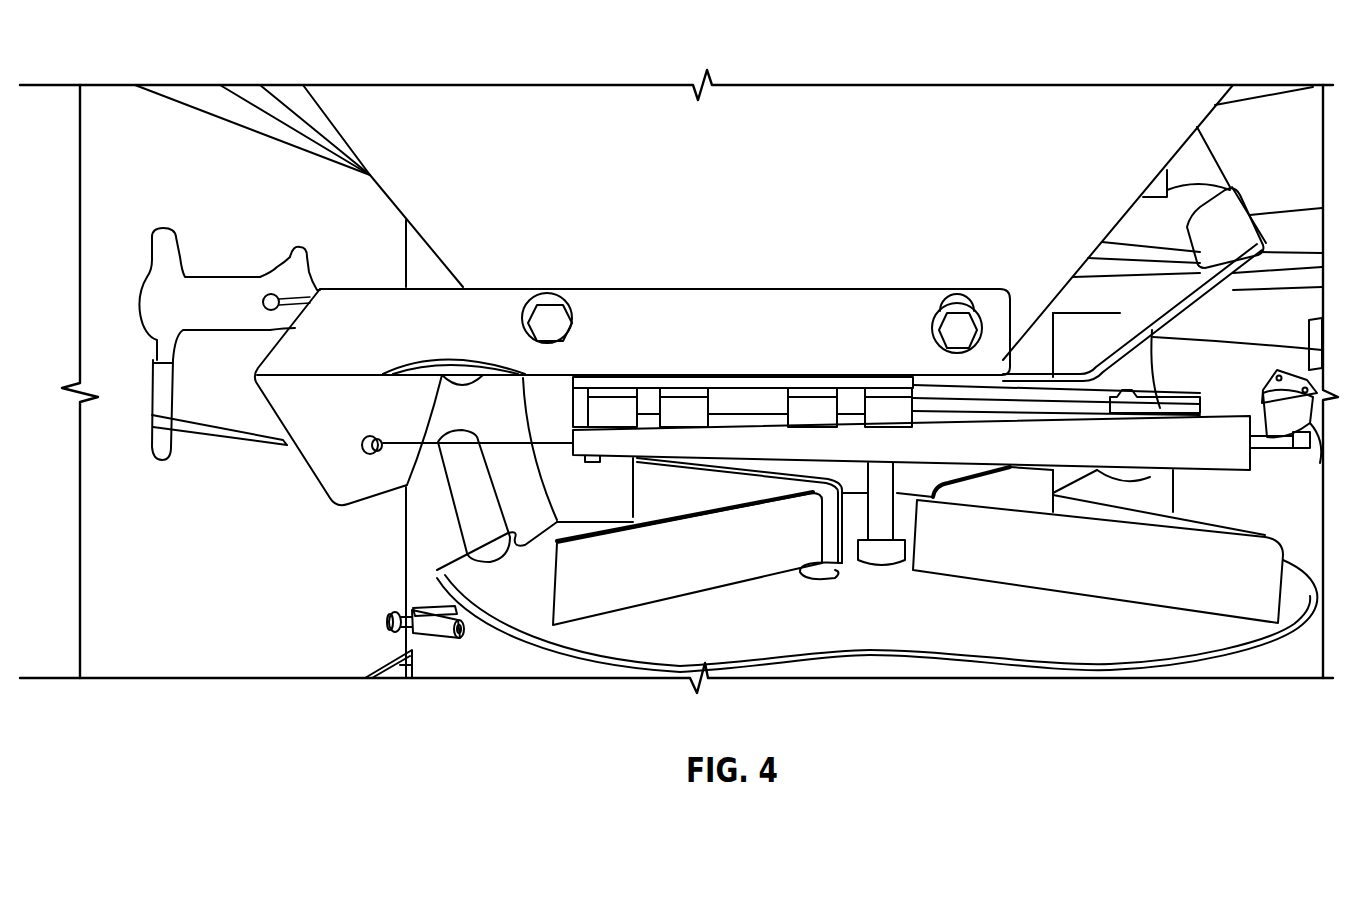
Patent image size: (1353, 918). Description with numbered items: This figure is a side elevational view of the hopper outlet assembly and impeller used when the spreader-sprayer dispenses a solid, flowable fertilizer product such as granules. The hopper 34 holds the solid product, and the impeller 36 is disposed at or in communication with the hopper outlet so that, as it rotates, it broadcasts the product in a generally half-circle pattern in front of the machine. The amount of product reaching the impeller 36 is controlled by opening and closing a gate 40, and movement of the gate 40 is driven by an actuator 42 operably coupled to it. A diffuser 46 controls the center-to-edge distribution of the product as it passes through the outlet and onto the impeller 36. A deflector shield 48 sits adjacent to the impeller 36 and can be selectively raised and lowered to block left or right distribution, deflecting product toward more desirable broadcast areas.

The hopper 34 is at (916, 116).
The impeller 36 is at (1107, 652).
The gate 40 is at (1143, 400).
The actuator 42 is at (163, 444).
The diffuser 46 is at (827, 383).
The deflector shield 48 is at (1107, 377).